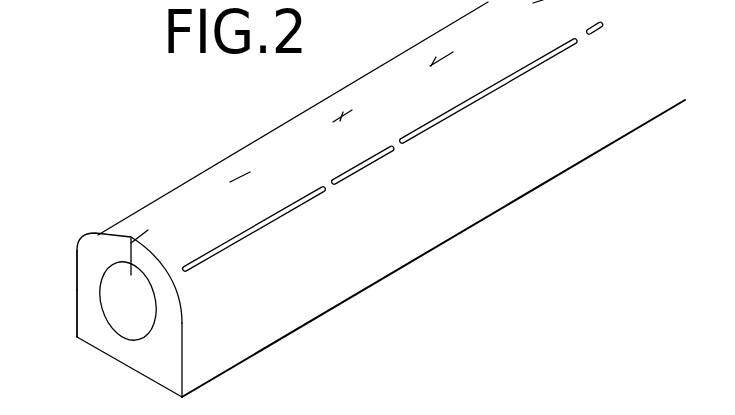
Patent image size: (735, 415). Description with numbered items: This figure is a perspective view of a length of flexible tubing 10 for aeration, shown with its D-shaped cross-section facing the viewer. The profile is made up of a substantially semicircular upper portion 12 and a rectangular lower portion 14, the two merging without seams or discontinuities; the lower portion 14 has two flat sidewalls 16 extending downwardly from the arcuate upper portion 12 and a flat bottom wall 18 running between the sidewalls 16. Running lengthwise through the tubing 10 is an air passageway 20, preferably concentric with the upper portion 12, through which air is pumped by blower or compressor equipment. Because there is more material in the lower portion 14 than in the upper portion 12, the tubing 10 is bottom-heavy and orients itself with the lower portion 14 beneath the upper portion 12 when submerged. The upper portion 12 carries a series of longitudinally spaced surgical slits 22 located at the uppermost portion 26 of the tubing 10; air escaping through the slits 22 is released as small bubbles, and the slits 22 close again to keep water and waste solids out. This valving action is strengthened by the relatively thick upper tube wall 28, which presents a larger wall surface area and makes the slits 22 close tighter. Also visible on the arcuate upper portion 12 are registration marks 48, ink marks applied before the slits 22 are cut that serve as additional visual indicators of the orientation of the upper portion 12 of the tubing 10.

The flexible tubing 10 is at (468, 233).
The upper portion 12 is at (83, 229).
The lower portion 14 is at (78, 289).
The flat sidewalls 16 is at (183, 353).
The flat bottom wall 18 is at (123, 363).
The air passageway 20 is at (141, 300).
The slits 22 is at (127, 253).
The uppermost portion 26 is at (197, 205).
The upper tube wall 28 is at (157, 270).
The registration marks 48 is at (427, 135).